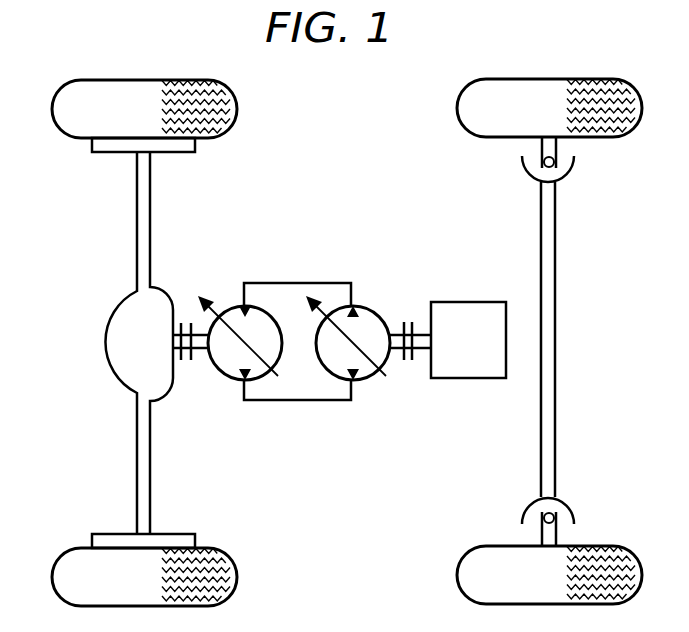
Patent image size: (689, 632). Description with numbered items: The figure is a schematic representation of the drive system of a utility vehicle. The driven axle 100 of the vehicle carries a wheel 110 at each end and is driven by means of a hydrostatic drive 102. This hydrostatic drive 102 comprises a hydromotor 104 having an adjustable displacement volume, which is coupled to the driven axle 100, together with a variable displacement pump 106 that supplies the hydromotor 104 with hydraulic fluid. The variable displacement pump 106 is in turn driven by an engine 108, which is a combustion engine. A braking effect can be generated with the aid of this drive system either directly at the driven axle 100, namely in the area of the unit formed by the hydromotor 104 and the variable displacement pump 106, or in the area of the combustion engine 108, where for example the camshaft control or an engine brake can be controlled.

The driven axle 100 is at (100, 462).
The hydrostatic drive 102 is at (308, 268).
The hydromotor 104 is at (202, 403).
The variable displacement pump 106 is at (398, 285).
The engine 108 is at (475, 303).
The wheel 110 is at (80, 175).